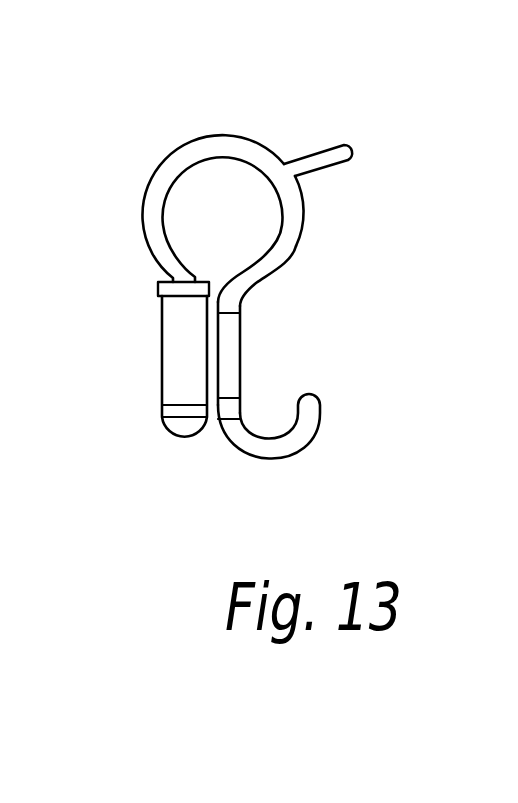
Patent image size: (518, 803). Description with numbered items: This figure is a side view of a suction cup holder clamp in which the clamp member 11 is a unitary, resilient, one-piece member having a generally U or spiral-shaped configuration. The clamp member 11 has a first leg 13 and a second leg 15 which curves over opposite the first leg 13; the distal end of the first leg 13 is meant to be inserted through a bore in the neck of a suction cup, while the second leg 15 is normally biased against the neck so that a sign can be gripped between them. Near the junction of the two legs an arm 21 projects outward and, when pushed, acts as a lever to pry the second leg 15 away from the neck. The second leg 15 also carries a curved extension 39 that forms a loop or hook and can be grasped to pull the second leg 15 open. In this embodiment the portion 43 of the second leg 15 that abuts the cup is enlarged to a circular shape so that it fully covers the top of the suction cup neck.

The clamp member 11 is at (303, 178).
The first leg 13 is at (173, 152).
The second leg 15 is at (288, 243).
The arm 21 is at (350, 148).
The curved extension 39 is at (316, 440).
The enlarged portion 43 is at (240, 360).